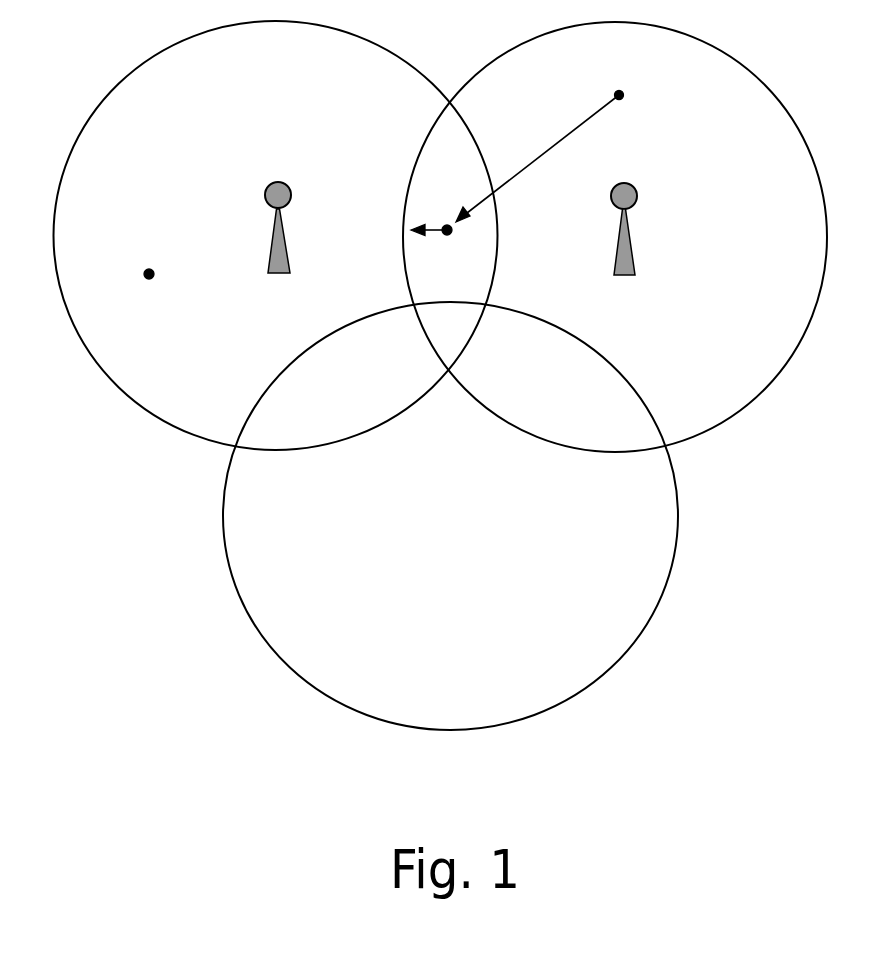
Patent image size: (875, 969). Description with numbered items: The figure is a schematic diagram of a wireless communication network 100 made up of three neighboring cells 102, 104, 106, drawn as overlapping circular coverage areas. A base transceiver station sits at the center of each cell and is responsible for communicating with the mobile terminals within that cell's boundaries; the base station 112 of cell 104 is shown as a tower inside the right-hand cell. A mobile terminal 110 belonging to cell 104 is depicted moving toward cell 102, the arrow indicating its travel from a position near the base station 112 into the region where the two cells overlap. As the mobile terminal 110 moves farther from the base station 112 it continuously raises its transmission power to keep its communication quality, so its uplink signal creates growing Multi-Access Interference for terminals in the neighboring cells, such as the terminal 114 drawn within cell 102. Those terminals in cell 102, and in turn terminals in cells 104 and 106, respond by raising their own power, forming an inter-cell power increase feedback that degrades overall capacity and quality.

The wireless communication network 100 is at (450, 375).
The cell 102 is at (276, 235).
The cell 104 is at (615, 237).
The cell 106 is at (450, 516).
The mobile terminal 110 is at (555, 163).
The base station 112 is at (626, 251).
The mobile station 114 is at (128, 299).